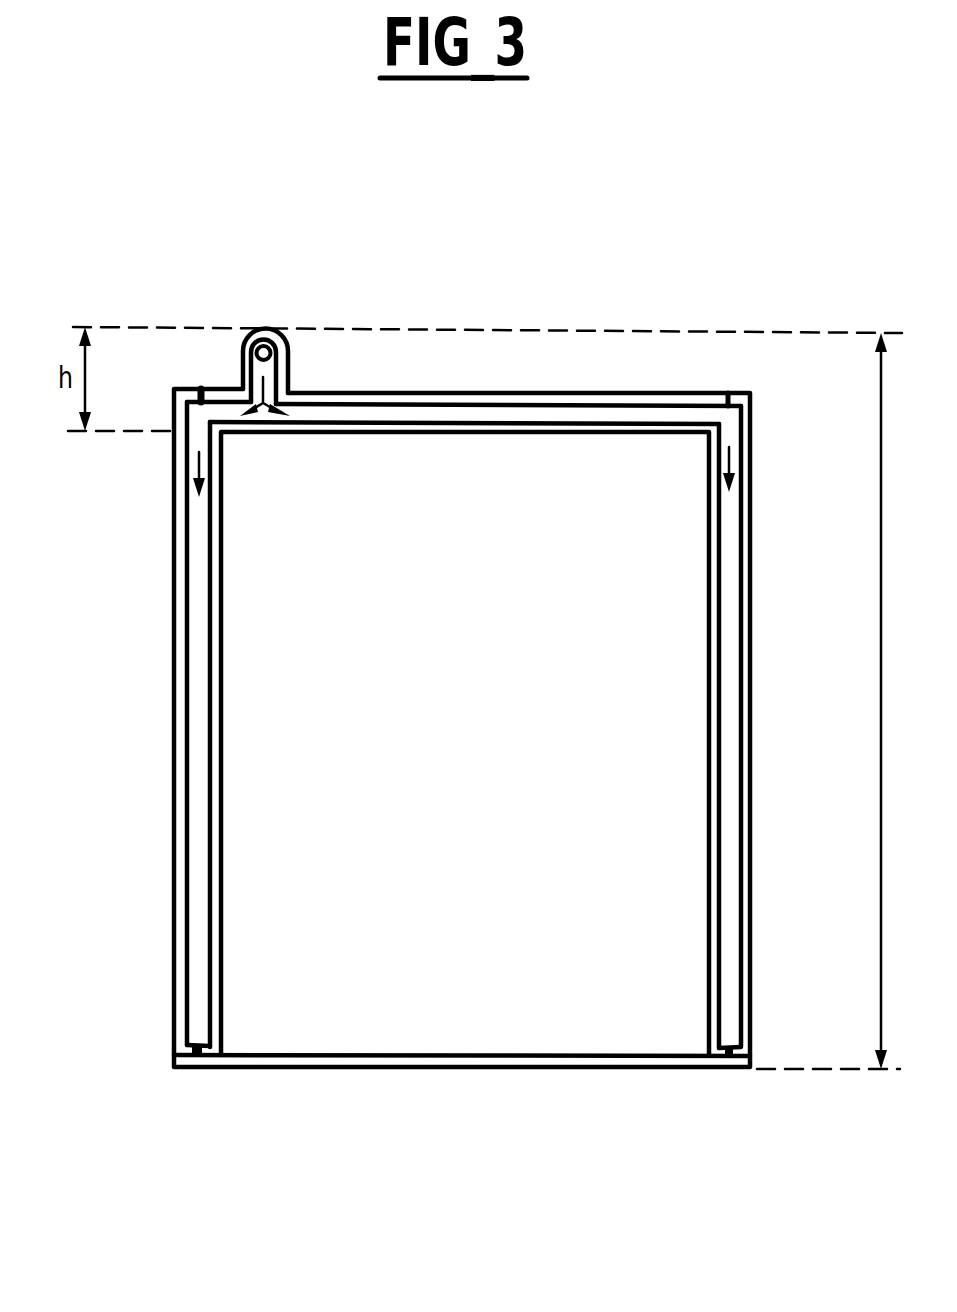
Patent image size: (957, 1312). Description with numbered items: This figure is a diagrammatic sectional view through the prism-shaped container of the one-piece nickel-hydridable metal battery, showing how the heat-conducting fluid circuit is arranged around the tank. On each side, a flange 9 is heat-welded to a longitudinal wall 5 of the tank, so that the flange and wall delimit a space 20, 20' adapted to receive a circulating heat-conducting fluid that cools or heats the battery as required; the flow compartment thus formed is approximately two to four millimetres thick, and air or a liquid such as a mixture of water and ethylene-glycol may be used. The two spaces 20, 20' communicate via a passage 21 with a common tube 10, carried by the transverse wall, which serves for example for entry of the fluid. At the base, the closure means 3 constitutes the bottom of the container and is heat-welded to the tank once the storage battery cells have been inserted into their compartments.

The closure means 3 is at (650, 1064).
The longitudinal wall 5 is at (213, 988).
The flange 9 is at (177, 588).
The tube 10 is at (262, 330).
The space 20 is at (390, 724).
The space 20' is at (768, 727).
The passage 21 is at (493, 406).